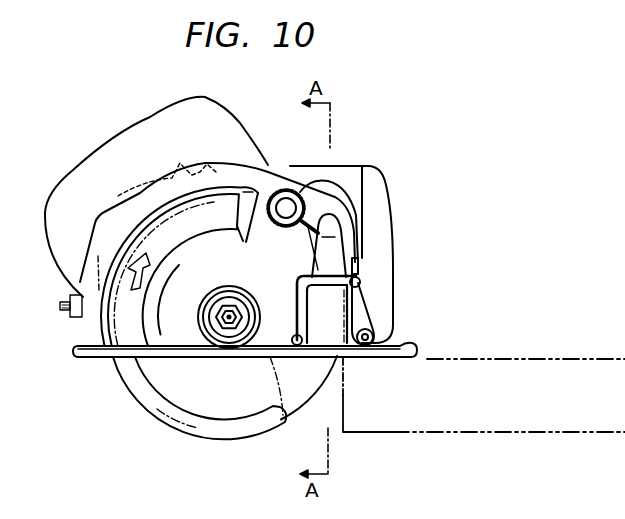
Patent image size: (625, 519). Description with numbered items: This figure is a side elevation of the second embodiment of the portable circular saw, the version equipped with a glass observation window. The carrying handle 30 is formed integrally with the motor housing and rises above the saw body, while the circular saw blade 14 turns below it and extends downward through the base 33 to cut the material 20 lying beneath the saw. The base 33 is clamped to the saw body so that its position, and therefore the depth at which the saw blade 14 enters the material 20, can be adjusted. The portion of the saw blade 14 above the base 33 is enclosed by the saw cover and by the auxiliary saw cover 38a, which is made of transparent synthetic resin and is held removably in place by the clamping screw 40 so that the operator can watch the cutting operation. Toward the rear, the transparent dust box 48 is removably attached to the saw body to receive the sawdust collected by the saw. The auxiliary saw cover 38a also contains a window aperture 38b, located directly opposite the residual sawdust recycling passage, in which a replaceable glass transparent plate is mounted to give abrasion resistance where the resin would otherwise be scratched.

The carrying handle 30 is at (158, 110).
The auxiliary saw cover 38a is at (193, 267).
The clamping screw 40 is at (282, 190).
The dust box 48 is at (377, 177).
The window aperture 38b is at (333, 330).
The base 33 is at (412, 347).
The circular saw blade 14 is at (298, 400).
The material 20 is at (468, 433).